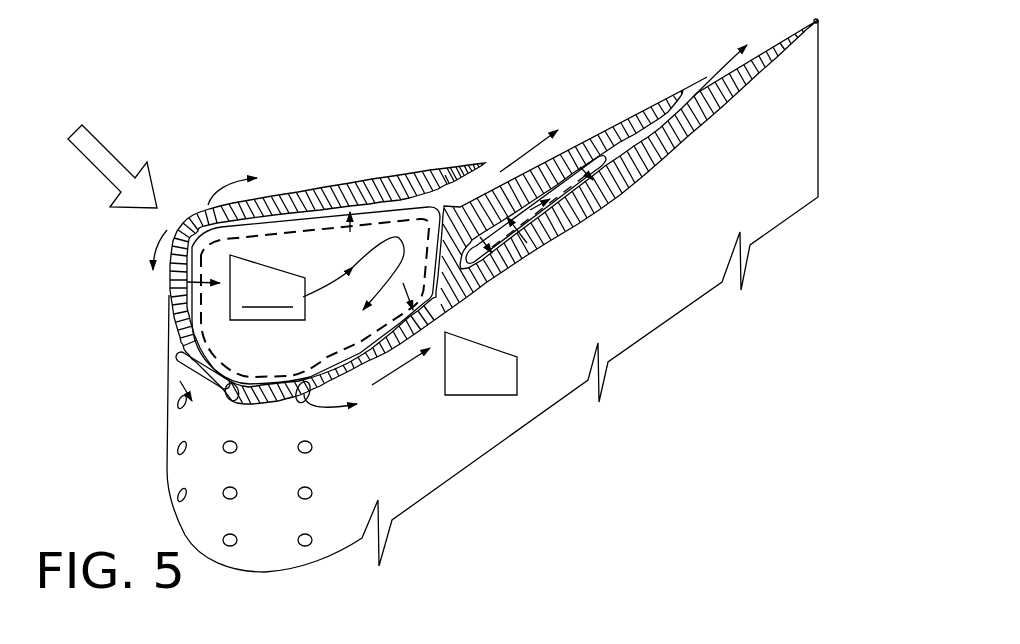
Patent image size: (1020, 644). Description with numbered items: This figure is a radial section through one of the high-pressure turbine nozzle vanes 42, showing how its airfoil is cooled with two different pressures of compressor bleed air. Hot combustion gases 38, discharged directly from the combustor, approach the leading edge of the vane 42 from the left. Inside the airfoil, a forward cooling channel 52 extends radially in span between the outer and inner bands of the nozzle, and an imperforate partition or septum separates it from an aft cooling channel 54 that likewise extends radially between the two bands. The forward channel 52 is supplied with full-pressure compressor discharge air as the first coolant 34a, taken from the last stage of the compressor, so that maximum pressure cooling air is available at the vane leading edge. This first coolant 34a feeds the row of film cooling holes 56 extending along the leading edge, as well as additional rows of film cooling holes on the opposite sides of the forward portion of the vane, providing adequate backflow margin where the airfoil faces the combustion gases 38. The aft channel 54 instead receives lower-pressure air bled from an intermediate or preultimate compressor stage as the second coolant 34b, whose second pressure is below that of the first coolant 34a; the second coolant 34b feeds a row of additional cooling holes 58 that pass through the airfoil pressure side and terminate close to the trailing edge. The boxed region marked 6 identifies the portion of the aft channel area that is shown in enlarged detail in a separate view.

The hot combustion gas flow 38 is at (103, 148).
The nozzle vane 42 is at (357, 178).
The first coolant 34a is at (378, 240).
The second coolant 34b is at (552, 230).
The forward cooling channel 52 is at (285, 361).
The aft cooling channel 54 is at (636, 138).
The film cooling holes 56 is at (172, 240).
The additional cooling holes 58 is at (684, 88).
The detail view reference 6 is at (530, 217).